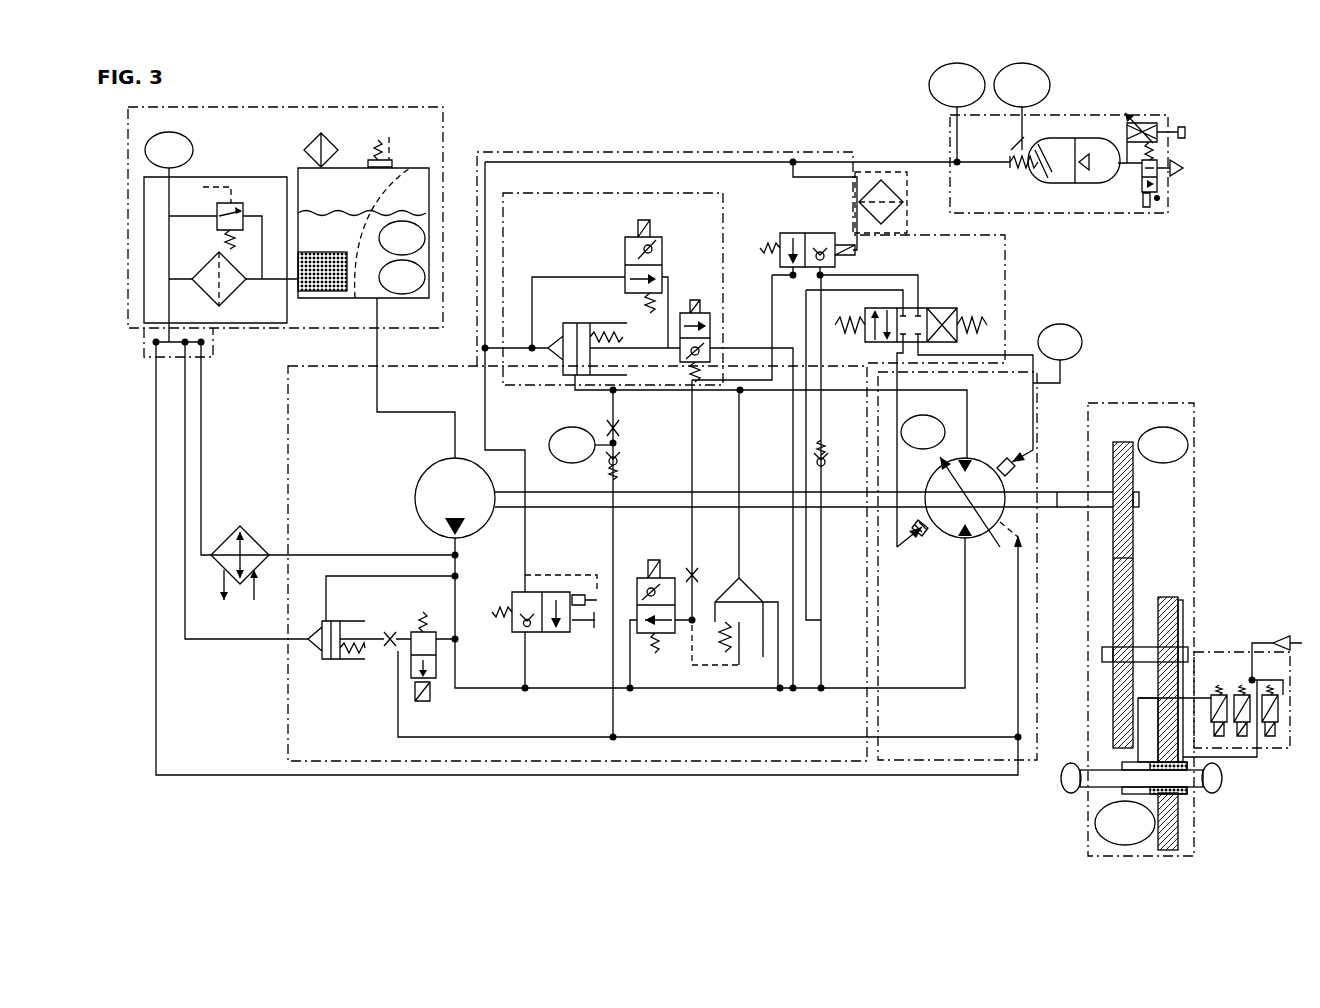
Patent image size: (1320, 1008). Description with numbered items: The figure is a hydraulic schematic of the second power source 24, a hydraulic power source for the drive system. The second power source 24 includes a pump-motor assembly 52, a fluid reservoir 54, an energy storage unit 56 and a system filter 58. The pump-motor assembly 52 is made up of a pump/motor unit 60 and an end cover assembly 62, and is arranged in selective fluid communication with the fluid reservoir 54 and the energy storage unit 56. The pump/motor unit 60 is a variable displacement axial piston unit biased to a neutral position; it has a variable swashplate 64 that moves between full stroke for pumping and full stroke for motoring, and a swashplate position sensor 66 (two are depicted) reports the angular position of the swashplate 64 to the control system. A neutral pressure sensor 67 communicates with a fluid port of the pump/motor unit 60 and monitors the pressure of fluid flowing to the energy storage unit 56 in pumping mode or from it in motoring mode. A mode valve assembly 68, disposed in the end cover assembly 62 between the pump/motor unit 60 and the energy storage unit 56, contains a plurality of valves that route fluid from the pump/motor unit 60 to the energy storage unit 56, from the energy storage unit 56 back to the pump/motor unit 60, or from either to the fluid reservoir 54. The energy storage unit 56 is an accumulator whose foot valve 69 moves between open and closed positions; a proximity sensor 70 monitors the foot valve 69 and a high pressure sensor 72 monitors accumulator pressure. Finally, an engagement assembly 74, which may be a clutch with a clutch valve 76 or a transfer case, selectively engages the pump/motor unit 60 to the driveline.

The second power source 24 is at (1202, 252).
The pump-motor assembly 52 is at (795, 762).
The fluid reservoir 54 is at (348, 168).
The energy storage unit 56 is at (1117, 214).
The system filter 58 is at (229, 328).
The pump/motor unit 60 is at (912, 762).
The end cover assembly 62 is at (778, 150).
The swashplate 64 is at (1000, 546).
The swashplate position sensor 66 is at (923, 416).
The neutral pressure sensor 67 is at (552, 430).
The mode valve assembly 68 is at (535, 193).
The foot valve 69 is at (1043, 164).
The proximity sensor 70 is at (1053, 82).
The high pressure sensor 72 is at (928, 83).
The engagement assembly 74 is at (1194, 487).
The clutch valve 76 is at (1213, 658).